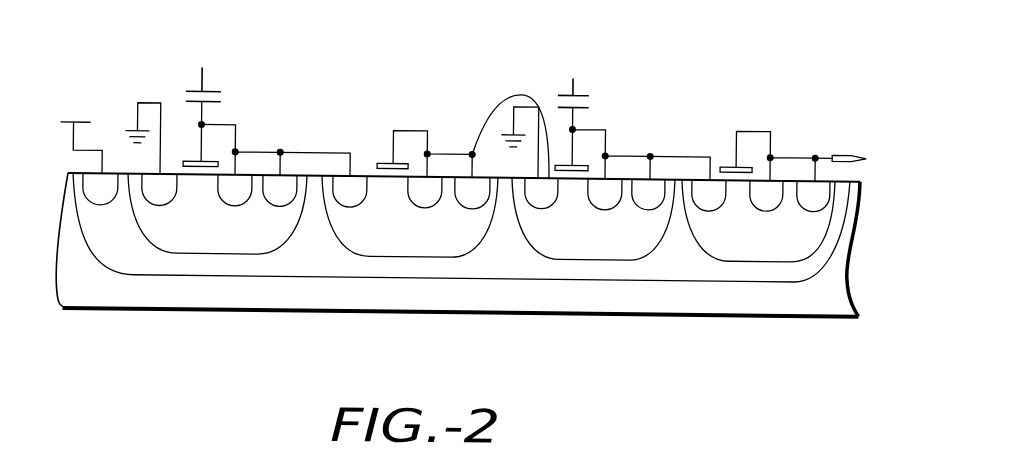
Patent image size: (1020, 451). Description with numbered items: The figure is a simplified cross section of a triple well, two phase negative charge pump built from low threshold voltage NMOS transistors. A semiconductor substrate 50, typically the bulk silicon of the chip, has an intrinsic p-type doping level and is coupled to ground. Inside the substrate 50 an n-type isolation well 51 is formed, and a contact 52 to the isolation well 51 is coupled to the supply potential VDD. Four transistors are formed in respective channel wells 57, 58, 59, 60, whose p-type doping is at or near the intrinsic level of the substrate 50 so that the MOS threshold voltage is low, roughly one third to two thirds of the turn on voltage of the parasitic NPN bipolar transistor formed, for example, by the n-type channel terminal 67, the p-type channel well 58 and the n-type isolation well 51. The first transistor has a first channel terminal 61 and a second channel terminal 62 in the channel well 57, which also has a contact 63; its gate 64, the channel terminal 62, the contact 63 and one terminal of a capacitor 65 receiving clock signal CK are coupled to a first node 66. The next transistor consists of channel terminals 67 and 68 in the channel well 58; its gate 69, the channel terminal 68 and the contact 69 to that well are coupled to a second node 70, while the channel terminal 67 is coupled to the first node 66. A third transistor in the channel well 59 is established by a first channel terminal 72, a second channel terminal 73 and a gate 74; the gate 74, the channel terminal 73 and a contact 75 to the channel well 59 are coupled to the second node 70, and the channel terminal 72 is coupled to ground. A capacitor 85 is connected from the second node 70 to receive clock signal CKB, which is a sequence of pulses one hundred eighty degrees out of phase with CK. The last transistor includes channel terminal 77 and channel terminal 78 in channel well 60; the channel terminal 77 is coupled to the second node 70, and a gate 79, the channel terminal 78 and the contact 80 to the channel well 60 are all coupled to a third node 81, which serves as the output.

The semiconductor substrate 50 is at (820, 294).
The isolation well 51 is at (825, 250).
The contact 52 is at (116, 176).
The channel well 57 is at (250, 236).
The channel well 58 is at (390, 242).
The channel well 59 is at (623, 239).
The channel well 60 is at (780, 239).
The first channel terminal 61 is at (170, 176).
The second channel terminal 62 is at (248, 174).
The contact 63 is at (290, 186).
The gate 64 is at (188, 158).
The capacitor 65 is at (197, 84).
The first node 66 is at (238, 146).
The channel terminal 67 is at (340, 177).
The channel terminal 68 is at (438, 176).
The gate 69 is at (387, 159).
The second node 70 is at (427, 124).
The first channel terminal 72 is at (572, 124).
The second channel terminal 73 is at (617, 184).
The gate 74 is at (582, 161).
The contact 75 is at (662, 183).
The channel terminal 77 is at (700, 183).
The channel terminal 78 is at (780, 189).
The gate 79 is at (724, 161).
The contact 80 is at (803, 189).
The third node 81 is at (841, 144).
The capacitor 85 is at (579, 90).